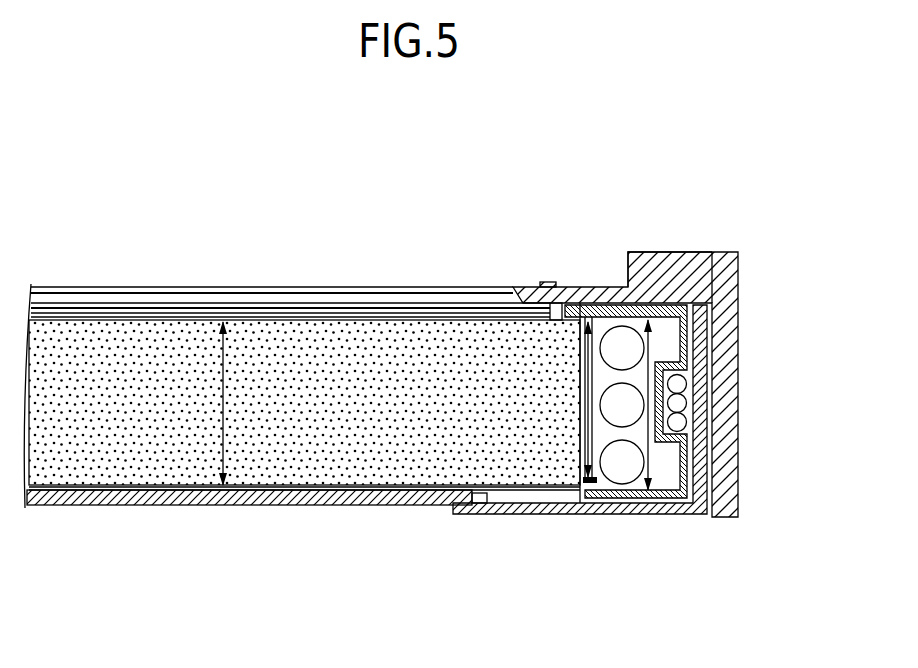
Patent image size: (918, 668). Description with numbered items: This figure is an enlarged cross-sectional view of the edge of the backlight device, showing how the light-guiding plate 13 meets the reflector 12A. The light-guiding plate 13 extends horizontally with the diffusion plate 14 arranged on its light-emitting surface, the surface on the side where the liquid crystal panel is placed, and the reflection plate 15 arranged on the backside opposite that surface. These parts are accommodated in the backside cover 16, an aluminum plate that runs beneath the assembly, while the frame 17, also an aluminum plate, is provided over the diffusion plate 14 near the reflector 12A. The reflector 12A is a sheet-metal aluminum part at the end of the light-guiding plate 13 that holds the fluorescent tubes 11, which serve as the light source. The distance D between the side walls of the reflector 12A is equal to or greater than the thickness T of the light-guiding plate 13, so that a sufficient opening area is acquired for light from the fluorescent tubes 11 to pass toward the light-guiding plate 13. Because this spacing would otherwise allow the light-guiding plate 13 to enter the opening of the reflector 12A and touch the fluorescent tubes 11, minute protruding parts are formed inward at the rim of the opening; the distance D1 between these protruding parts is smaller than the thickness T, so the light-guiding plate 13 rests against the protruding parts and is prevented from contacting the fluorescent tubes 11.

The diffusion plate 14 is at (180, 308).
The light-guiding plate 13 is at (343, 345).
The frame 17 is at (680, 262).
The reflector 12A is at (670, 288).
The distance between the side walls of the reflector D is at (650, 462).
The thickness of the light-guiding plate T is at (203, 488).
The backside cover 16 is at (272, 507).
The reflection plate 15 is at (492, 513).
The distance between the protruding parts D1 is at (587, 433).
The fluorescent tubes 11 is at (622, 467).